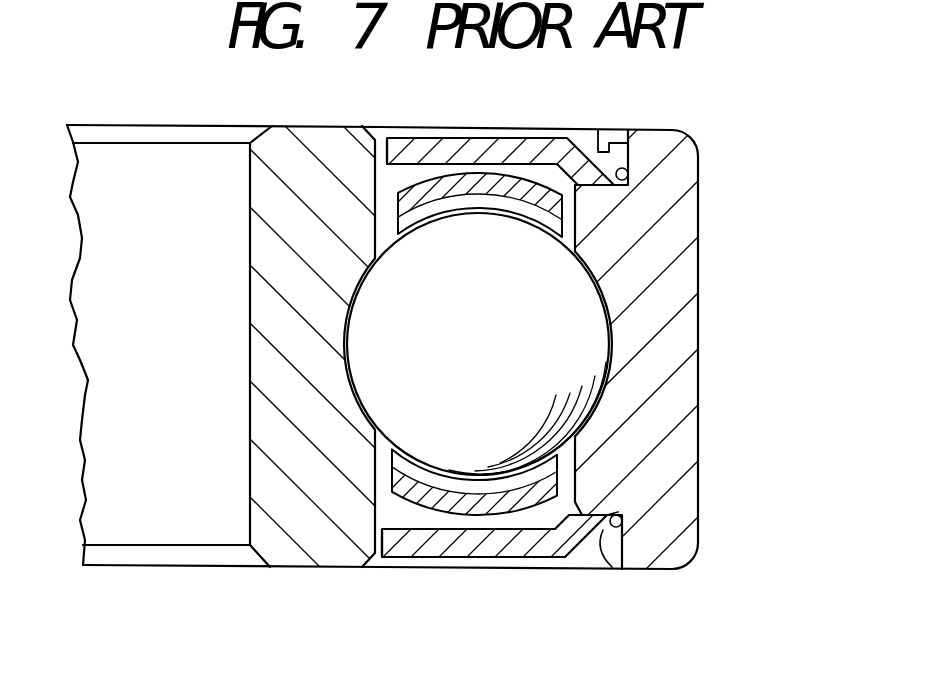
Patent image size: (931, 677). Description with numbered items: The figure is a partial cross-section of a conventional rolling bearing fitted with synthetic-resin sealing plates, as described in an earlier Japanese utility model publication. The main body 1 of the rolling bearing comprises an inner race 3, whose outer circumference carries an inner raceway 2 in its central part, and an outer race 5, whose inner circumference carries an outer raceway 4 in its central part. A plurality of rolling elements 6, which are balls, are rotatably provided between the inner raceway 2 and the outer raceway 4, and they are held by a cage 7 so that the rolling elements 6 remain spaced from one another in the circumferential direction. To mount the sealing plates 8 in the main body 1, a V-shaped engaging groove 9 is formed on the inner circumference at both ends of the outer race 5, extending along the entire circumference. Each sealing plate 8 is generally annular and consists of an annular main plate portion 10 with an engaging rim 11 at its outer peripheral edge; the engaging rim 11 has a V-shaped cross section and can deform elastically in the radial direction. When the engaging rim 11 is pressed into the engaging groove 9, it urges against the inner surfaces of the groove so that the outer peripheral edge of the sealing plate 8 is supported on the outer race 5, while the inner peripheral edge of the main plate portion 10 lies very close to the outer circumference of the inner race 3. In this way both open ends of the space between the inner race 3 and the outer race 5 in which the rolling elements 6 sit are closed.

The main body 1 is at (383, 280).
The inner raceway 2 is at (368, 348).
The inner race 3 is at (285, 537).
The outer raceway 4 is at (604, 346).
The outer race 5 is at (685, 222).
The rolling elements 6 is at (510, 237).
The cage 7 is at (470, 502).
The sealing plate 8 is at (483, 150).
The engaging groove 9 is at (630, 140).
The main plate portion 10 is at (437, 140).
The engaging rim 11 is at (599, 150).